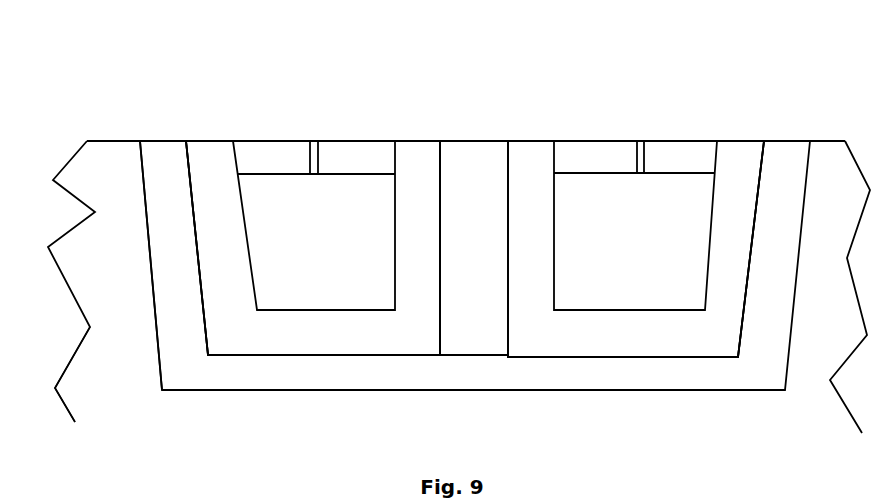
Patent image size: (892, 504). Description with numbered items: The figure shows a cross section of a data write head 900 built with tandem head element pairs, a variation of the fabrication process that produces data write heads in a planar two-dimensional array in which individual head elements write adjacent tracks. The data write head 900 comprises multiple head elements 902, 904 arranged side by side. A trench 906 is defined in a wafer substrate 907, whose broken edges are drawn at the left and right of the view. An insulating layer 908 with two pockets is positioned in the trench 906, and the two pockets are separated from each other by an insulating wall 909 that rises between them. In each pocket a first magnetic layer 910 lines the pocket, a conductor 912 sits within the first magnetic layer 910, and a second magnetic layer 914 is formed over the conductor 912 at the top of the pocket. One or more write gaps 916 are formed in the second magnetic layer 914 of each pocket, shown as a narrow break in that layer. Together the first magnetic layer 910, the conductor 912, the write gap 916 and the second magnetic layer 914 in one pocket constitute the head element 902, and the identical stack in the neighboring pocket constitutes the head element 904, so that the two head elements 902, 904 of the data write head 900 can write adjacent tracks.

The data write head 900 is at (168, 66).
The head element 902 is at (280, 117).
The head element 904 is at (696, 122).
The trench 906 is at (143, 158).
The wafer substrate 907 is at (63, 405).
The insulating layer 908 is at (290, 390).
The insulating wall 909 is at (480, 141).
The first magnetic layer 910 is at (221, 141).
The conductor 912 is at (395, 187).
The second magnetic layer 914 is at (362, 141).
The write gap 916 is at (312, 141).